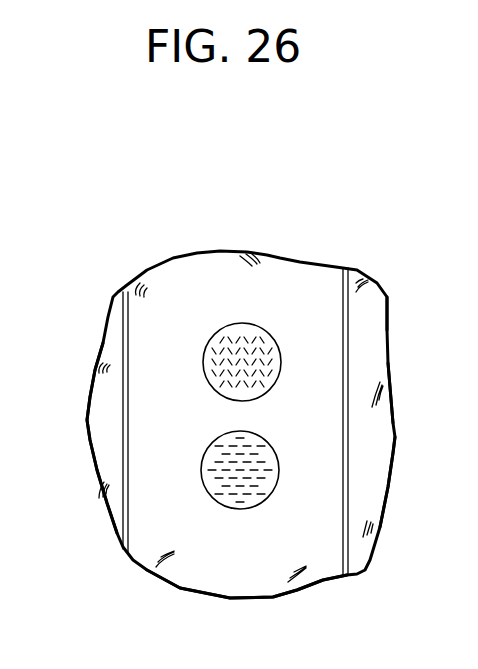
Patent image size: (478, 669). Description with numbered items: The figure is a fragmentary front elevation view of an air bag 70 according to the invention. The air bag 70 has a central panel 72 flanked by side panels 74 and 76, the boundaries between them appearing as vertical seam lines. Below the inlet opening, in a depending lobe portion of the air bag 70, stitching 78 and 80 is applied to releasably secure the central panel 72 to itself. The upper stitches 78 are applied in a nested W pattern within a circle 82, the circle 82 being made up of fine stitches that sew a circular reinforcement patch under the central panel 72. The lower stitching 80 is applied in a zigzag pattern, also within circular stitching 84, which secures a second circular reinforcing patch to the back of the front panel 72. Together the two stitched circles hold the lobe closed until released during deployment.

The air bag 70 is at (394, 272).
The central panel 72 is at (267, 575).
The side panel 74 is at (112, 450).
The side panel 76 is at (375, 460).
The stitching 78 is at (252, 337).
The stitching 80 is at (227, 508).
The circle 82 is at (219, 325).
The circular stitching 84 is at (274, 497).